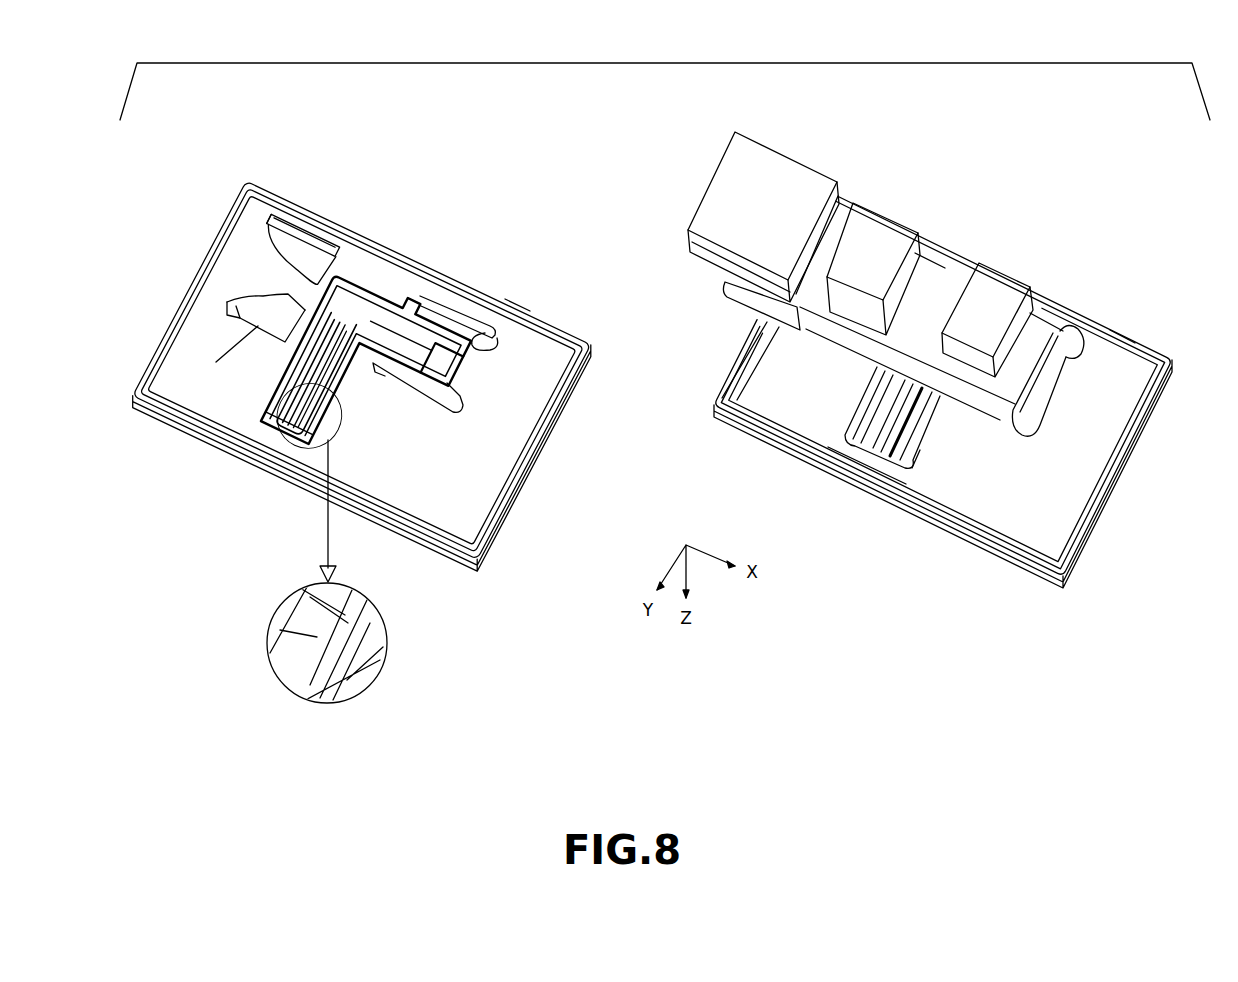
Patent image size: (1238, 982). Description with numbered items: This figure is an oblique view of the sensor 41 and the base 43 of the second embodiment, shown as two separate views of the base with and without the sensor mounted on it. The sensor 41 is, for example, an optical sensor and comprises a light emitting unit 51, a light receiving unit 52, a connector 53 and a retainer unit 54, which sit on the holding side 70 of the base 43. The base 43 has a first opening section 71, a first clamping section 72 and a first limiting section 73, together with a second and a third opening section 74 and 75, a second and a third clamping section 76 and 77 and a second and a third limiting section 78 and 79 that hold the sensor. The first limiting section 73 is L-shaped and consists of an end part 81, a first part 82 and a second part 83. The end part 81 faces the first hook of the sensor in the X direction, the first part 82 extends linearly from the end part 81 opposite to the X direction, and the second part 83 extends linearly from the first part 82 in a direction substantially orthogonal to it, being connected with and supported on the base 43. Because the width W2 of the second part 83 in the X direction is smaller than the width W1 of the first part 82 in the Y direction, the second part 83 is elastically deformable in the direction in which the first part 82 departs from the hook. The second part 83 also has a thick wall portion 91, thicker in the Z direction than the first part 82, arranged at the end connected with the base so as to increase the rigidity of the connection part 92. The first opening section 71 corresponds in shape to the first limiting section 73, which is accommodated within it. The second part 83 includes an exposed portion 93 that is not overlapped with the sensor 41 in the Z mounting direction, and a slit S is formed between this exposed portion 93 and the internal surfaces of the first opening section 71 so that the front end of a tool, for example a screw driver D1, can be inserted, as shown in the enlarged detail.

The sensor 41 is at (875, 260).
The base 43 is at (515, 302).
The light emitting unit 51 is at (1003, 281).
The light receiving unit 52 is at (888, 227).
The connector 53 is at (773, 173).
The retainer unit 54 is at (940, 259).
The holding side 70 is at (553, 389).
The first opening section 71 is at (407, 417).
The first clamping section 72 is at (463, 397).
The first limiting section 73 is at (374, 290).
The second opening section 74 is at (240, 355).
The third opening section 75 is at (313, 238).
The second clamping section 76 is at (226, 310).
The third clamping section 77 is at (291, 220).
The second limiting section 78 is at (240, 300).
The third limiting section 79 is at (266, 232).
The end part 81 is at (456, 353).
The first part 82 is at (404, 298).
The second part 83 is at (281, 385).
The thick wall portion 91 is at (308, 395).
The connection part 92 is at (278, 420).
The exposed portion 93 is at (912, 410).
The slit S is at (345, 425).
The width of the first part W1 is at (424, 332).
The width of the second part W2 is at (262, 420).
The screw driver D1 is at (367, 657).